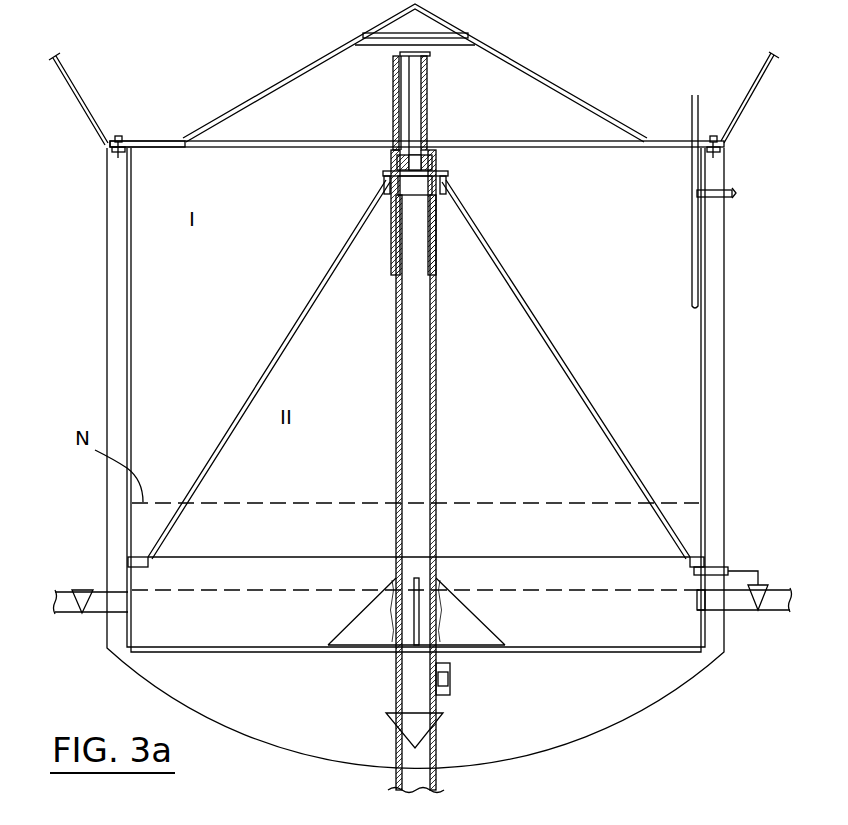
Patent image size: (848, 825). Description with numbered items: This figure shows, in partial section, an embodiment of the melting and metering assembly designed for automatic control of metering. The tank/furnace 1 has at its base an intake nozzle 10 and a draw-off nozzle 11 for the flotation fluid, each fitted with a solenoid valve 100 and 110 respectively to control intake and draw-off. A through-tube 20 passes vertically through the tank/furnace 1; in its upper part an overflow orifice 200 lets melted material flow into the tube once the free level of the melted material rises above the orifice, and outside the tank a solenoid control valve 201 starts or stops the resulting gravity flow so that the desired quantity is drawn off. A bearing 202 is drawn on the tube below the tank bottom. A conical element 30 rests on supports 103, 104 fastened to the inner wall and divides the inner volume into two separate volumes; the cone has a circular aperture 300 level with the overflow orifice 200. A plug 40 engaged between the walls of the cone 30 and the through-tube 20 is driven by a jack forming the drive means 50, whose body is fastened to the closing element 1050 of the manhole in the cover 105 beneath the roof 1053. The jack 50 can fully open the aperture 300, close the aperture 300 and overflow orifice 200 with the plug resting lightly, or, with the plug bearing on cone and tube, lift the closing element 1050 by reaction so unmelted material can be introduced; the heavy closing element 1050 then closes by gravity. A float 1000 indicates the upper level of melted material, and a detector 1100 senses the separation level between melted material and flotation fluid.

The tank/furnace 1 is at (107, 275).
The intake nozzle 10 is at (105, 590).
The draw-off nozzle 11 is at (729, 612).
The through-tube 20 is at (423, 390).
The frustoconical element 30 is at (527, 298).
The plug 40 is at (436, 168).
The drive means 50 is at (426, 90).
The solenoid valve 100 is at (82, 586).
The support 103 is at (138, 555).
The support 104 is at (698, 548).
The cover 105 is at (152, 142).
The solenoid valve 110 is at (759, 611).
The overflow orifice 200 is at (447, 178).
The solenoid control valve 201 is at (421, 723).
The bearing 202 is at (450, 678).
The aperture 300 is at (384, 186).
The float 1000 is at (698, 107).
The closing element 1050 is at (267, 138).
The roof 1053 is at (315, 62).
The detector 1100 is at (724, 567).